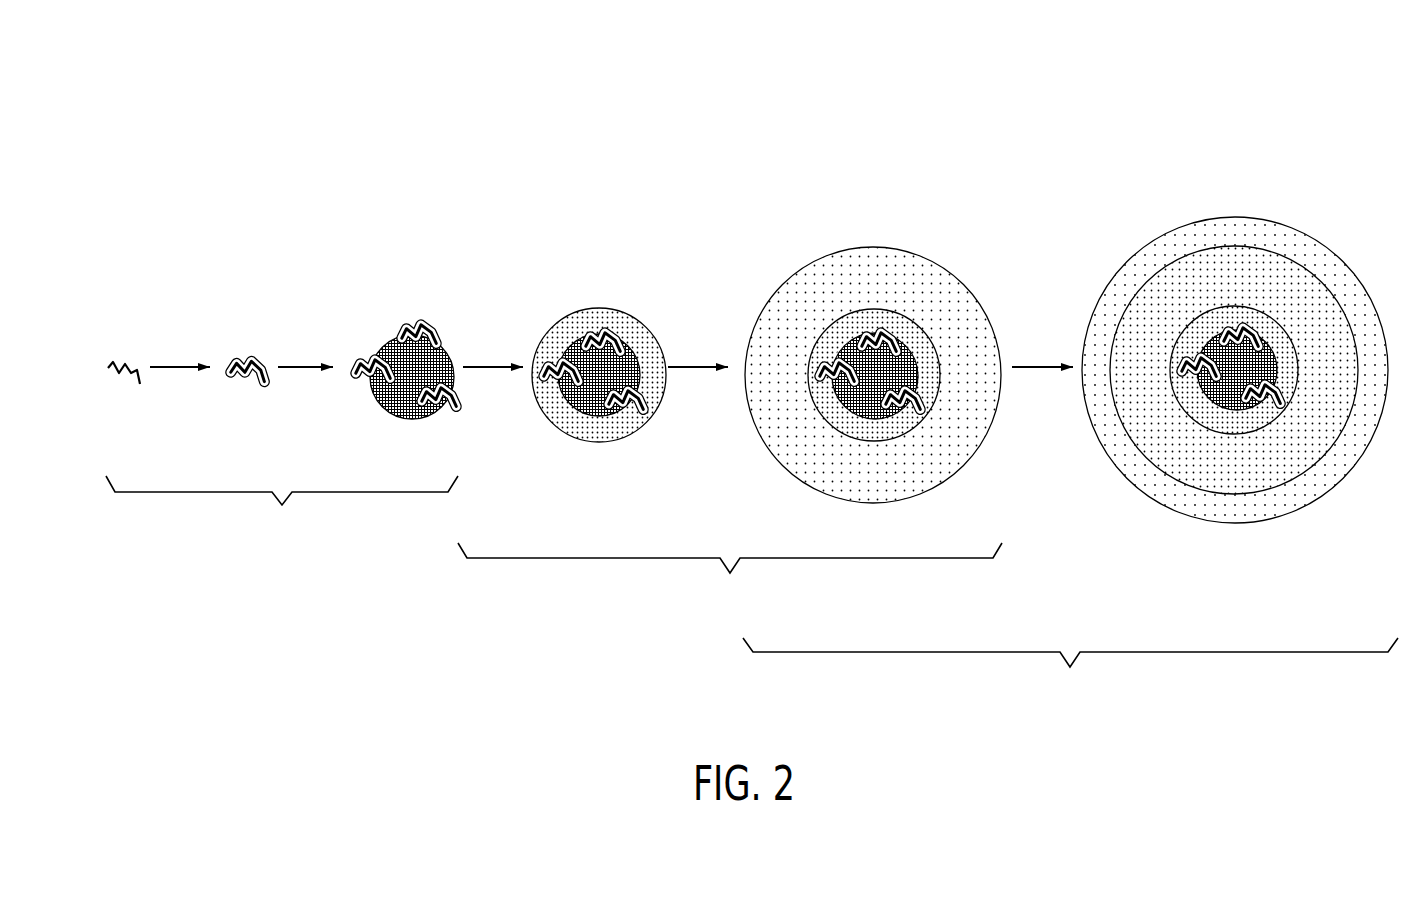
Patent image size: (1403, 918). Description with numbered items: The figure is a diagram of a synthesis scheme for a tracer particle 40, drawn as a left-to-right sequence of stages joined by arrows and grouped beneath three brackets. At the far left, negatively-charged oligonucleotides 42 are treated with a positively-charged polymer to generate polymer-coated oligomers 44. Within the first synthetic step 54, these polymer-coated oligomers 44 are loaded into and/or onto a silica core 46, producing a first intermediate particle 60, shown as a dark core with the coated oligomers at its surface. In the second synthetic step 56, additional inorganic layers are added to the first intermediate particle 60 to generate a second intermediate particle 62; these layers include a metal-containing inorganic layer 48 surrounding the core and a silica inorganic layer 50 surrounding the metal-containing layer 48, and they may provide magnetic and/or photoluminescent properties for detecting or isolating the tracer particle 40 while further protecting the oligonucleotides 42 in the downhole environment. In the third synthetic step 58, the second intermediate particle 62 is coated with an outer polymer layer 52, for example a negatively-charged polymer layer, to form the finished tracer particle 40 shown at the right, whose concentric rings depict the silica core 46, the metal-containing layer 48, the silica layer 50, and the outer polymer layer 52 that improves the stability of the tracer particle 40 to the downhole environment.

The tracer particle 40 is at (1178, 197).
The negatively-charged oligonucleotides 42 is at (124, 362).
The polymer-coated oligomers 44 is at (248, 357).
The silica core 46 is at (382, 345).
The metal-containing inorganic layer 48 is at (571, 313).
The silica inorganic layer 50 is at (803, 268).
The outer polymer layer 52 is at (1148, 245).
The first synthetic step 54 is at (282, 507).
The second synthetic step 56 is at (730, 574).
The third synthetic step 58 is at (1070, 668).
The first intermediate particle 60 is at (380, 298).
The second intermediate particle 62 is at (848, 232).